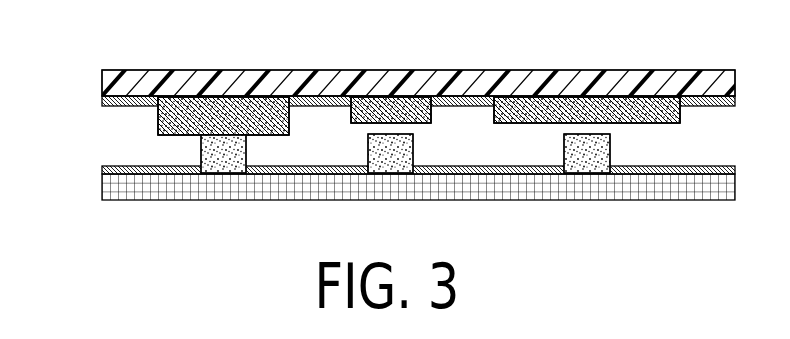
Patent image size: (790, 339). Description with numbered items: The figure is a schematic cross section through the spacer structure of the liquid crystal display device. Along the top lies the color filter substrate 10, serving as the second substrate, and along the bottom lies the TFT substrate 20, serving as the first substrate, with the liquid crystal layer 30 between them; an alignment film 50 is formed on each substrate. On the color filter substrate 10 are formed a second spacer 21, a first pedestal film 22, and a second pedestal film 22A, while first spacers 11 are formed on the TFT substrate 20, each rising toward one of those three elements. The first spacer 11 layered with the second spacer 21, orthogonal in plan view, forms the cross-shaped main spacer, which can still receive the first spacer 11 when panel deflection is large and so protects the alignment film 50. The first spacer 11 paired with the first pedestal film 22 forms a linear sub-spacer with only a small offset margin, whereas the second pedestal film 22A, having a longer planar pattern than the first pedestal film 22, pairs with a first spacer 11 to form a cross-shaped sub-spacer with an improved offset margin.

The color filter substrate 10 is at (108, 88).
The alignment film 50 is at (108, 104).
The liquid crystal layer 30 is at (118, 135).
The TFT substrate 20 is at (108, 186).
The second spacer 21 is at (196, 104).
The first pedestal film 22 is at (372, 104).
The second pedestal film 22A is at (565, 104).
The first spacer 11 is at (225, 150).